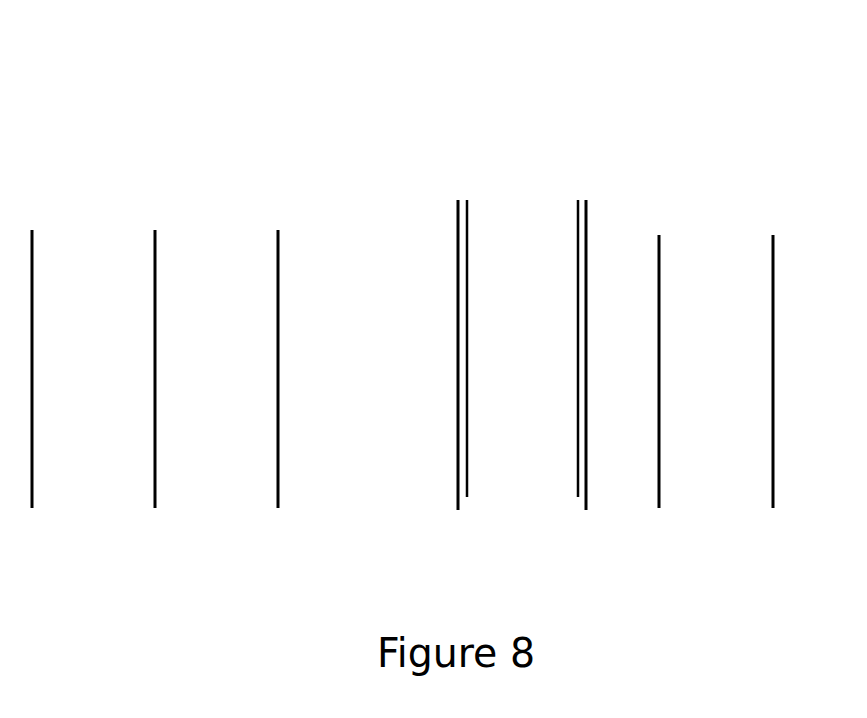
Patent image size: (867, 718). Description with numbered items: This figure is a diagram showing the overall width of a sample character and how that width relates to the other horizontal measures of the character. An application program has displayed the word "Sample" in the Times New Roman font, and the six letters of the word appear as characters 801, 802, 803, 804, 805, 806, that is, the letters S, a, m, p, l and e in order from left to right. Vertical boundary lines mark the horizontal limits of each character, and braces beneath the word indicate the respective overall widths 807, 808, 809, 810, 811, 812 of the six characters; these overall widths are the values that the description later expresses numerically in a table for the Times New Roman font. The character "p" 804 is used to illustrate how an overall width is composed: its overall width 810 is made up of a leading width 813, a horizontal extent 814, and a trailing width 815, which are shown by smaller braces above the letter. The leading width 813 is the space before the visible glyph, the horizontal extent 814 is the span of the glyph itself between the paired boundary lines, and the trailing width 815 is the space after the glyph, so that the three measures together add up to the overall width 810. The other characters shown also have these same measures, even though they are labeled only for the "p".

The character 801 is at (65, 243).
The character 802 is at (188, 243).
The character 803 is at (343, 247).
The character 804 is at (490, 247).
The character 805 is at (617, 248).
The character 806 is at (715, 248).
The overall width 807 is at (35, 514).
The overall width 808 is at (277, 514).
The overall width 809 is at (281, 514).
The overall width 810 is at (461, 514).
The overall width 811 is at (658, 514).
The overall width 812 is at (772, 514).
The leading width 813 is at (452, 182).
The horizontal extent 814 is at (575, 193).
The trailing width 815 is at (592, 182).